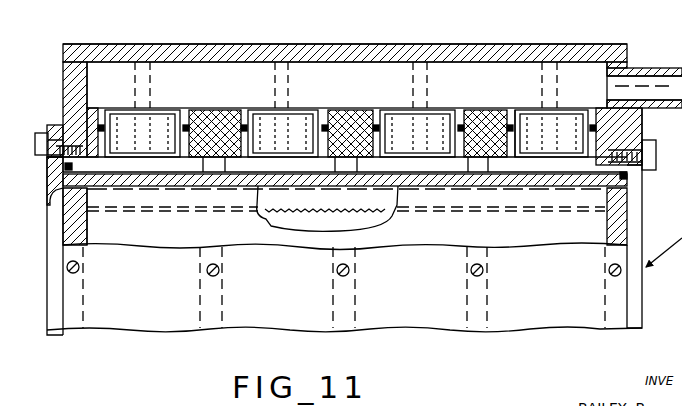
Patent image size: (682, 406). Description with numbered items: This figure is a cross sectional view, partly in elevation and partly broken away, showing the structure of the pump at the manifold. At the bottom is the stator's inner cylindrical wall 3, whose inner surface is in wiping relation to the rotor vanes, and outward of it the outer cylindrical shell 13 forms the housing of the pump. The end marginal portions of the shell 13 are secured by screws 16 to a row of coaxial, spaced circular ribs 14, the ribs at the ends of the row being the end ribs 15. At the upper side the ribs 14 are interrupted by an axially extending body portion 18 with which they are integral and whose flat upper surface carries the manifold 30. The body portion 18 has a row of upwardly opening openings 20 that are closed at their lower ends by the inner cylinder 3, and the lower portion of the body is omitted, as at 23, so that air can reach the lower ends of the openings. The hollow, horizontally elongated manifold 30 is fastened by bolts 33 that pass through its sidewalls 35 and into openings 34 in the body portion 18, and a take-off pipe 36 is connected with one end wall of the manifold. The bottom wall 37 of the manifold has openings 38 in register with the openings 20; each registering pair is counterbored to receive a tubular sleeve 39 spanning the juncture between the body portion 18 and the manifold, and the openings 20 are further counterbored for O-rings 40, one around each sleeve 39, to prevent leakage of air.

The inner cylindrical wall 3 is at (192, 186).
The outer cylindrical shell 13 is at (562, 299).
The circular ribs 14 is at (239, 106).
The end ribs 15 is at (66, 135).
The screws 16 is at (80, 268).
The body portion 18 is at (496, 128).
The openings 20 is at (296, 165).
The omitted lower portion of body 23 is at (437, 165).
The manifold 30 is at (579, 46).
The bolts 33 is at (300, 72).
The openings for bolts 34 is at (143, 111).
The sidewalls of manifold 35 is at (63, 78).
The pipe 36 is at (648, 70).
The bottom wall of manifold 37 is at (197, 115).
The openings in bottom wall 38 is at (308, 109).
The tubular sleeve 39 is at (182, 127).
The O-rings 40 is at (505, 125).